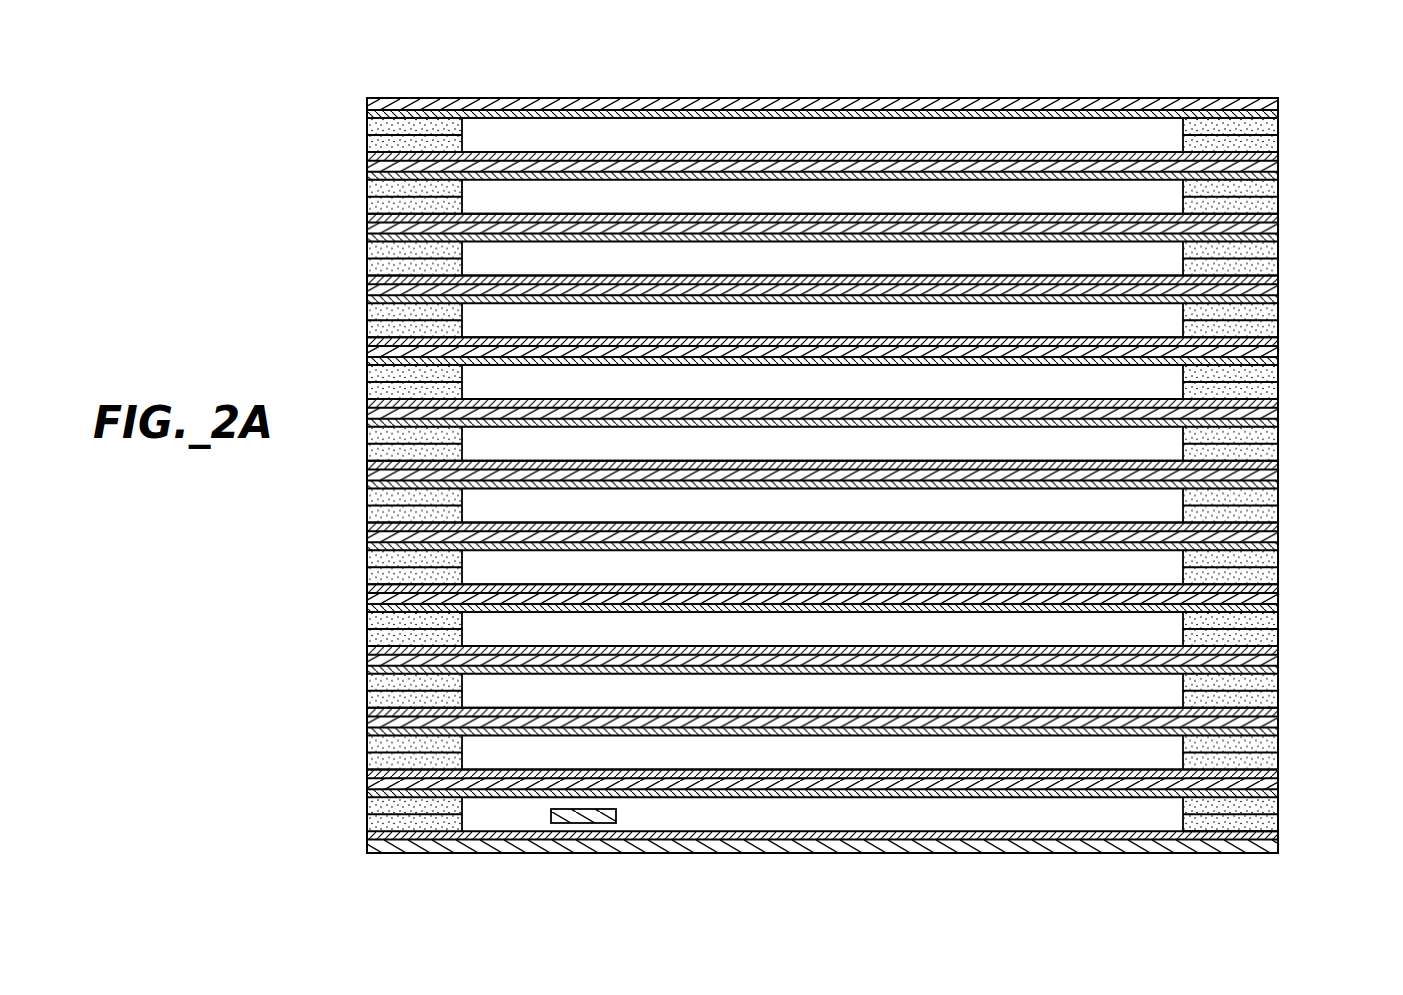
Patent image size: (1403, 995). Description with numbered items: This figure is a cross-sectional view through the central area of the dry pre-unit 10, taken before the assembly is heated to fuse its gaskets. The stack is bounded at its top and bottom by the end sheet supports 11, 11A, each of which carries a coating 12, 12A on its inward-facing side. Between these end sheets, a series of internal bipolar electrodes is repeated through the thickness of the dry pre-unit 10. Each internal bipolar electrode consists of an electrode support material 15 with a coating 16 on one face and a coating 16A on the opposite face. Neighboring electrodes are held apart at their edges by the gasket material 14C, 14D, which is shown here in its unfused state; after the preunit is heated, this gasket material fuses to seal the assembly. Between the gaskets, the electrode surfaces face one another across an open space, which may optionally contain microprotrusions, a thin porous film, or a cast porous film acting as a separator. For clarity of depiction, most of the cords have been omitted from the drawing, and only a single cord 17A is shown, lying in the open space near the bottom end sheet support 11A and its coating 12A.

The dry pre-unit 10 is at (500, 86).
The end sheet support 11 is at (367, 104).
The coating 12 is at (367, 118).
The end sheet support 11A is at (367, 848).
The coating 12A is at (367, 832).
The gasket material 14C is at (1278, 807).
The gasket material 14D is at (1278, 825).
The electrode support material 15 is at (1278, 783).
The coating 16 is at (1278, 773).
The coating 16A is at (1278, 793).
The cord 17A is at (588, 826).